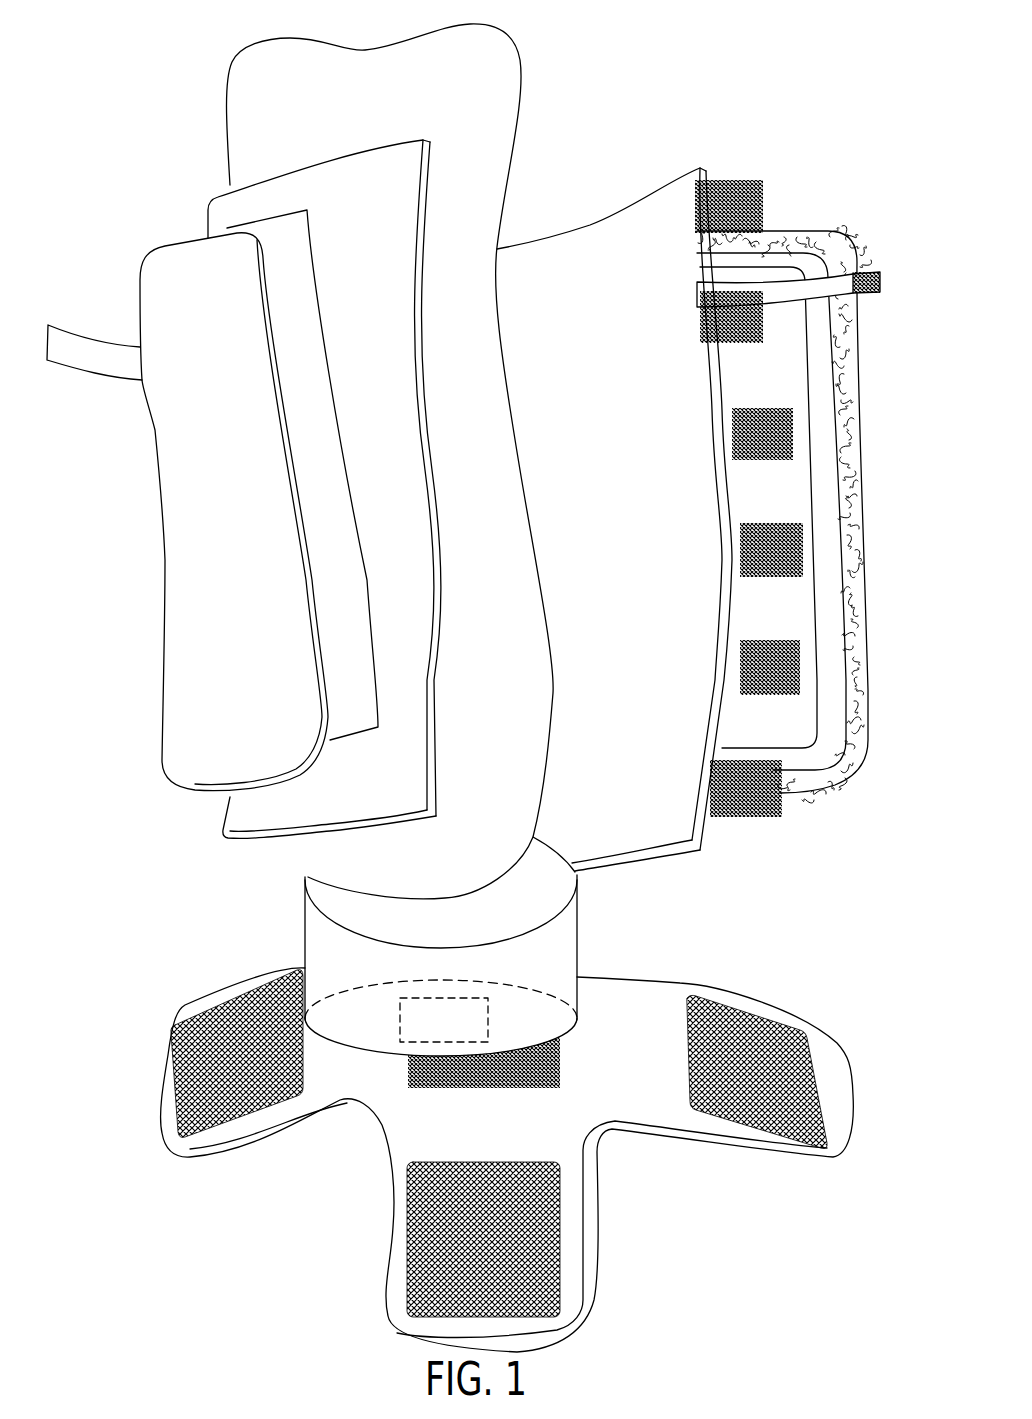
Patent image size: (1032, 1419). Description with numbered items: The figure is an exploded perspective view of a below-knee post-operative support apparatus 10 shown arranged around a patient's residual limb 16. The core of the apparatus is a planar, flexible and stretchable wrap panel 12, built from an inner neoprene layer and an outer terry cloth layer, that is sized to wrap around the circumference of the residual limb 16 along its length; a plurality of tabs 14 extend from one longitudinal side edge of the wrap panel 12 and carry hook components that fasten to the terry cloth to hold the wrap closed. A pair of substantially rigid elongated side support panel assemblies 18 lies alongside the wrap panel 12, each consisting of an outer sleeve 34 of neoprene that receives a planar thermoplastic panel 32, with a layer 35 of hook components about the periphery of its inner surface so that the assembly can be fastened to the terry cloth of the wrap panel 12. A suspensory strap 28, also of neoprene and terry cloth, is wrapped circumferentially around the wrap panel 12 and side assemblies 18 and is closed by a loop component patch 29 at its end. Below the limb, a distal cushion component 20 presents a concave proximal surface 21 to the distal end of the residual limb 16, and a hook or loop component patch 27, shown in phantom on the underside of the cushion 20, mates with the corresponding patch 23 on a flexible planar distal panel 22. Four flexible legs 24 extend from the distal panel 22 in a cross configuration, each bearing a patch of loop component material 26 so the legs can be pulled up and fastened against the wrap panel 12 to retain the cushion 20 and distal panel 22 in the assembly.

The post-operative support apparatus 10 is at (122, 114).
The wrap panel 12 is at (600, 224).
The tabs 14 is at (751, 185).
The residual limb 16 is at (518, 602).
The elongated side support panel assembly 18 is at (478, 514).
The distal cushion component 20 is at (438, 981).
The concave proximal surface 21 is at (306, 876).
The distal panel 22 is at (488, 1160).
The loop or hook patch 23 is at (562, 1076).
The flexible legs 24 is at (198, 1158).
The patch of loop component material 26 is at (175, 1065).
The hook or loop component patch 27 is at (453, 1008).
The suspensory strap 28 is at (92, 360).
The loop component patch 29 is at (866, 275).
The thermoplastic panel 32 is at (312, 318).
The outer sleeve 34 is at (177, 527).
The layer of hook components 35 is at (853, 552).